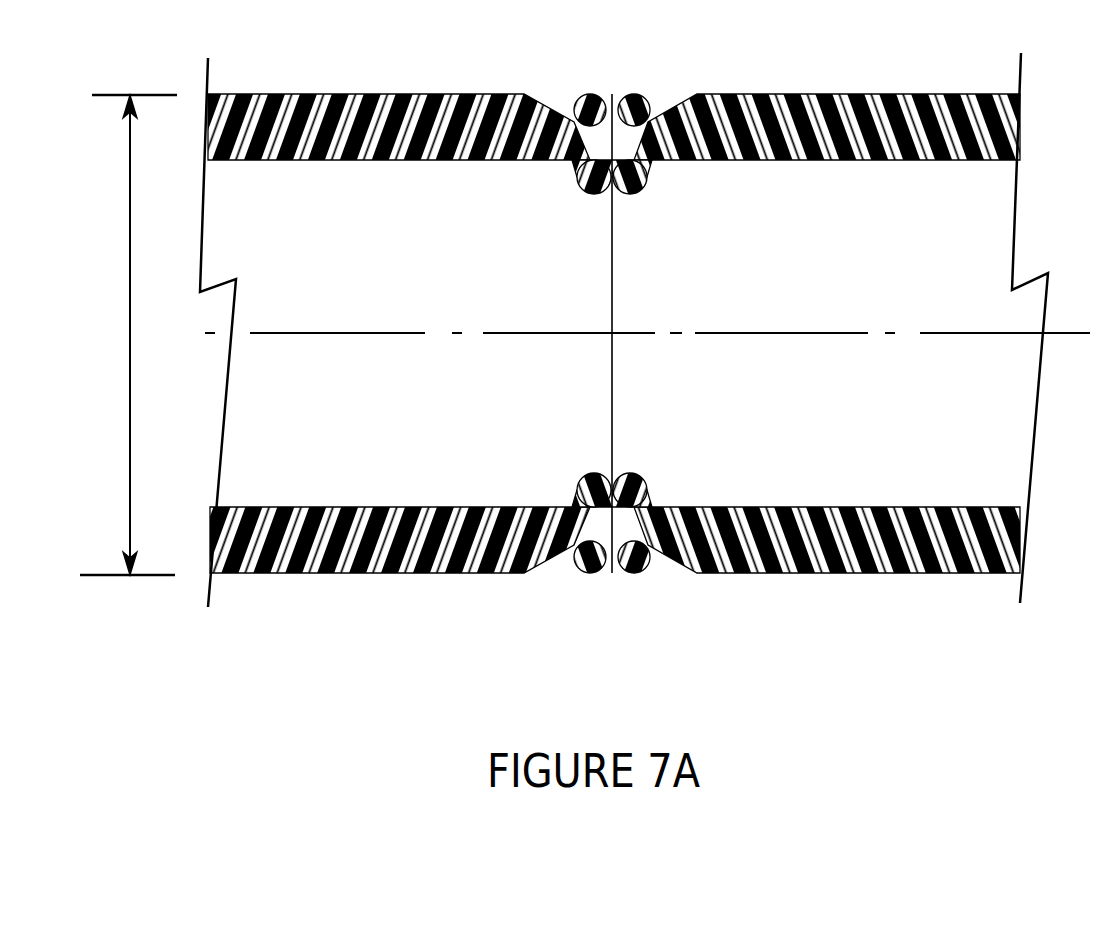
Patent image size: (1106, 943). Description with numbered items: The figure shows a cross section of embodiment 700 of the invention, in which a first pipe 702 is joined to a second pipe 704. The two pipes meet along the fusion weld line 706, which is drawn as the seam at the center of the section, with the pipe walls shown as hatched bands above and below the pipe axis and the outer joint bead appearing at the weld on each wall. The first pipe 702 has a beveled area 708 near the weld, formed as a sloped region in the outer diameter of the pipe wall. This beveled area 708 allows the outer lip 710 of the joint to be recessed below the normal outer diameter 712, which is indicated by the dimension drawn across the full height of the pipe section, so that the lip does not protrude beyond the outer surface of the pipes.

The embodiment 700 is at (573, 375).
The first pipe 702 is at (232, 497).
The second pipe 704 is at (940, 457).
The fusion weld line 706 is at (612, 427).
The beveled area 708 is at (572, 118).
The outer lip 710 is at (594, 95).
The normal outer diameter 712 is at (130, 497).